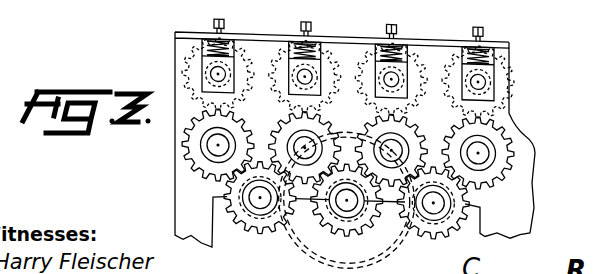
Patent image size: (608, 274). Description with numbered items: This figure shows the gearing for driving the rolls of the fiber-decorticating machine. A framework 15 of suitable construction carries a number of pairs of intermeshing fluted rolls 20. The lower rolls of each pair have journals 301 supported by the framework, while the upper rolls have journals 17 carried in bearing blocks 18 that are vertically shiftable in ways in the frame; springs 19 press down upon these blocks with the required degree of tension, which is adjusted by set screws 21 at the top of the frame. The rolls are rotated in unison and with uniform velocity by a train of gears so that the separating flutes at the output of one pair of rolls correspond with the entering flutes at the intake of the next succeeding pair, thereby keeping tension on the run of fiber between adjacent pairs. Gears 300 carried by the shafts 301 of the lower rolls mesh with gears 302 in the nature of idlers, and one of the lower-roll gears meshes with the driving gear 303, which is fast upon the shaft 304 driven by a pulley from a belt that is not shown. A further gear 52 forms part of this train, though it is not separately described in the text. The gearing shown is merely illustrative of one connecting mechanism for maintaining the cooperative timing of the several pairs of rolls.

The framework 15 is at (180, 200).
The journals 17 is at (212, 75).
The bearing blocks 18 is at (377, 60).
The springs 19 is at (297, 42).
The intermeshing fluted rolls 20 is at (200, 93).
The set screws 21 is at (215, 20).
The gear 52 is at (260, 210).
The gears 300 is at (500, 127).
The journals 301 is at (216, 146).
The idler gears 302 is at (467, 204).
The driving gear 303 is at (347, 200).
The shaft 304 is at (340, 205).